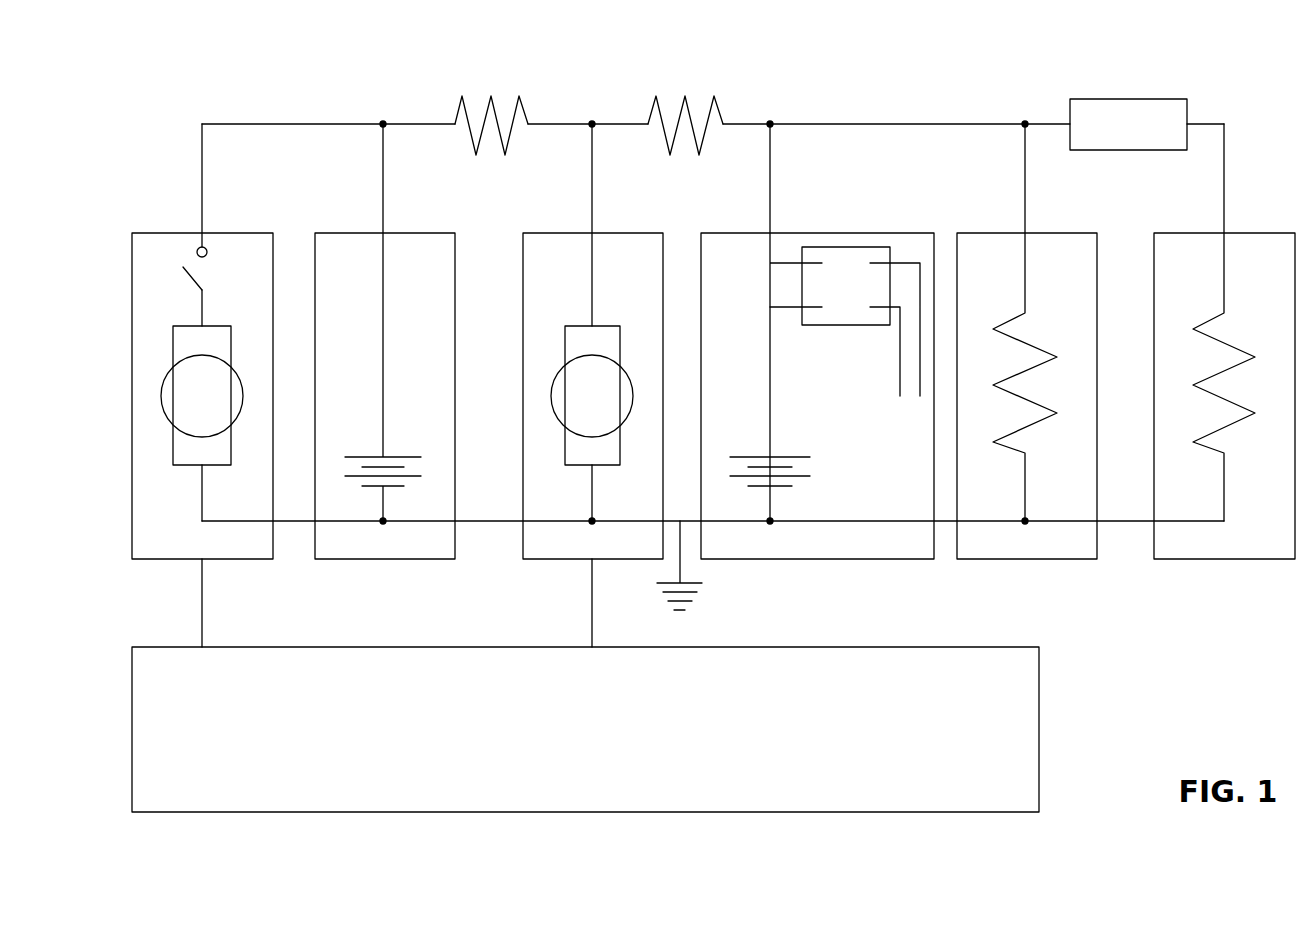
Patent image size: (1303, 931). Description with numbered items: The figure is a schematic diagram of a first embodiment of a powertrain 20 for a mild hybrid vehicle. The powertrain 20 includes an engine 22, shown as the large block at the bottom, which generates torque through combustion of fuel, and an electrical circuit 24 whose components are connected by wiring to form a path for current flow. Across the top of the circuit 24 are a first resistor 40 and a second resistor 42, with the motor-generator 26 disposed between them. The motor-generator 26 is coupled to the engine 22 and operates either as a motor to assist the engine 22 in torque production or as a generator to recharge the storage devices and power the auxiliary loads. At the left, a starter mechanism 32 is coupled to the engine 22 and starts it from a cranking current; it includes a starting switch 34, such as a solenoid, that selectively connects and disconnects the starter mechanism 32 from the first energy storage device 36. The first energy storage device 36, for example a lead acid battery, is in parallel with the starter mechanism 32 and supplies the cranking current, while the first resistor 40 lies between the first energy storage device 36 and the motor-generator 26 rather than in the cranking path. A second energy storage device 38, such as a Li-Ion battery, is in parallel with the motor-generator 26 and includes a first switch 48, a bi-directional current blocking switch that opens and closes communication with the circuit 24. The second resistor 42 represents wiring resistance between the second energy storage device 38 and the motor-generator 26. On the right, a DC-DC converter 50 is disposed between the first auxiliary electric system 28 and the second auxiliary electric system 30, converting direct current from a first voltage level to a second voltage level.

The powertrain 20 is at (612, 72).
The engine 22 is at (939, 812).
The electrical circuit 24 is at (892, 124).
The motor-generator 26 is at (626, 232).
The first auxiliary electric system 28 is at (1225, 559).
The second auxiliary electric system 30 is at (1039, 559).
The starter mechanism 32 is at (162, 232).
The starting switch 34 is at (192, 272).
The first energy storage device 36 is at (421, 232).
The second energy storage device 38 is at (826, 232).
The first resistor 40 is at (484, 118).
The second resistor 42 is at (706, 118).
The first switch 48 is at (873, 247).
The DC-DC converter 50 is at (1131, 98).